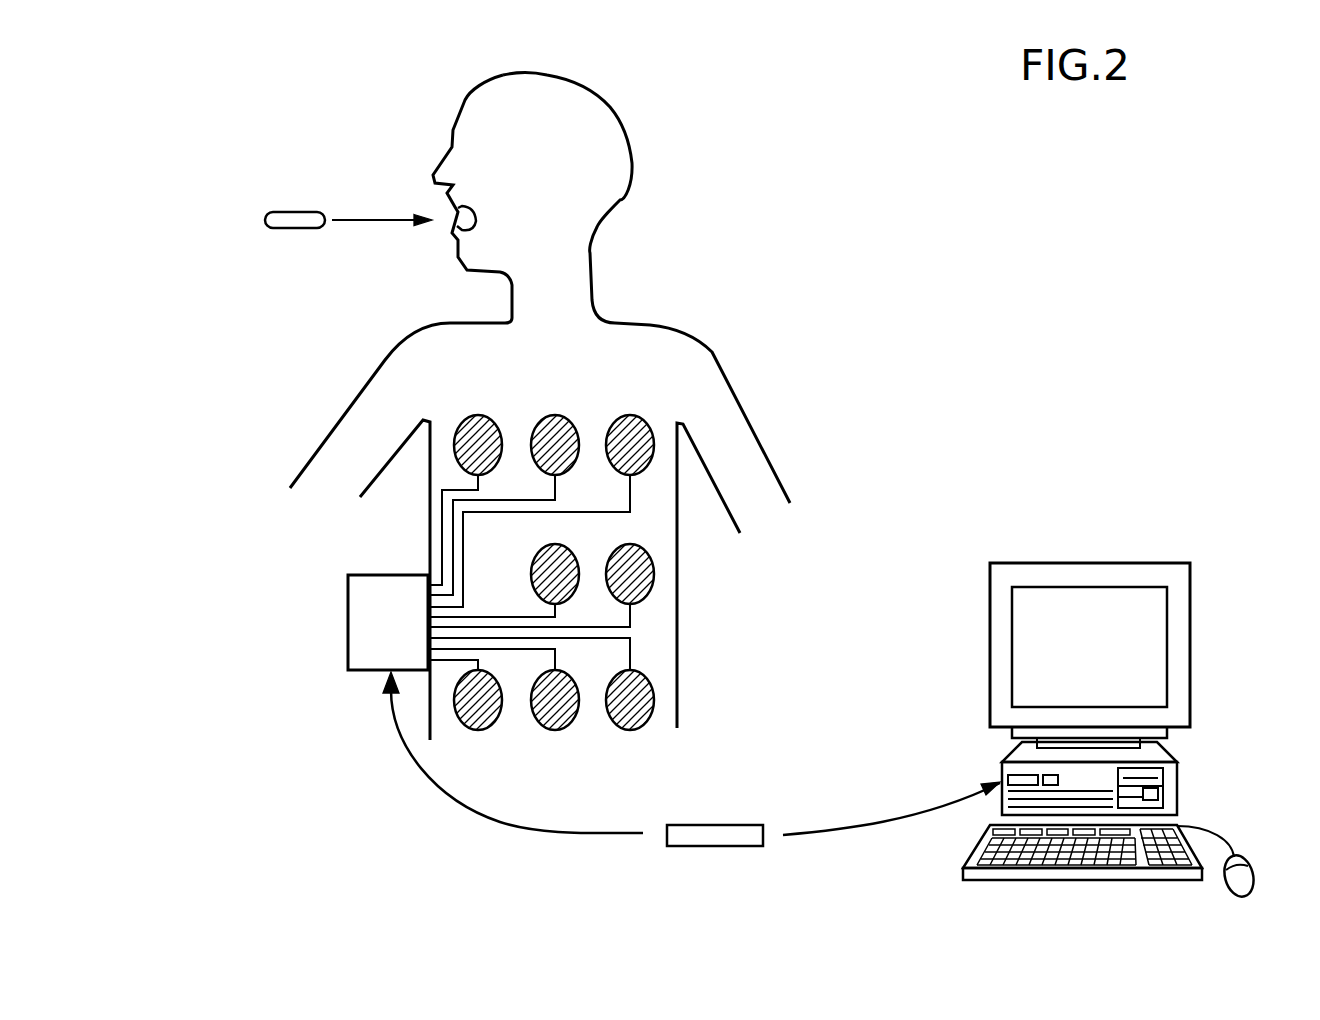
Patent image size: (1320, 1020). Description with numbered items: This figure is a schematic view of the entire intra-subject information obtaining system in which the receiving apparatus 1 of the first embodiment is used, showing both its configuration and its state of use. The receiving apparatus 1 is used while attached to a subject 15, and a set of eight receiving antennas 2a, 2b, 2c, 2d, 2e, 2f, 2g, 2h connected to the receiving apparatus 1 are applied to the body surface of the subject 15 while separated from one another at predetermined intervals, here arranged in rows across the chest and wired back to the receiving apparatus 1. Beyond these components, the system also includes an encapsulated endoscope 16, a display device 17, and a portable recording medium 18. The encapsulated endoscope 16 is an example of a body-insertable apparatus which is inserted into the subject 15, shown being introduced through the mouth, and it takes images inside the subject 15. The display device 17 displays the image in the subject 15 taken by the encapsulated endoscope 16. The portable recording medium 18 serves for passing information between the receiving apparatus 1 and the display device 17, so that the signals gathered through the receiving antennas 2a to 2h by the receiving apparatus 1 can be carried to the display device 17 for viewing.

The receiving apparatus 1 is at (362, 628).
The receiving antenna 2a is at (477, 414).
The receiving antenna 2b is at (552, 414).
The receiving antenna 2c is at (627, 414).
The receiving antenna 2d is at (553, 543).
The receiving antenna 2e is at (627, 543).
The receiving antenna 2f is at (493, 732).
The receiving antenna 2g is at (570, 732).
The receiving antenna 2h is at (645, 732).
The subject 15 is at (570, 78).
The encapsulated endoscope 16 is at (295, 210).
The display device 17 is at (1082, 560).
The portable recording medium 18 is at (712, 838).